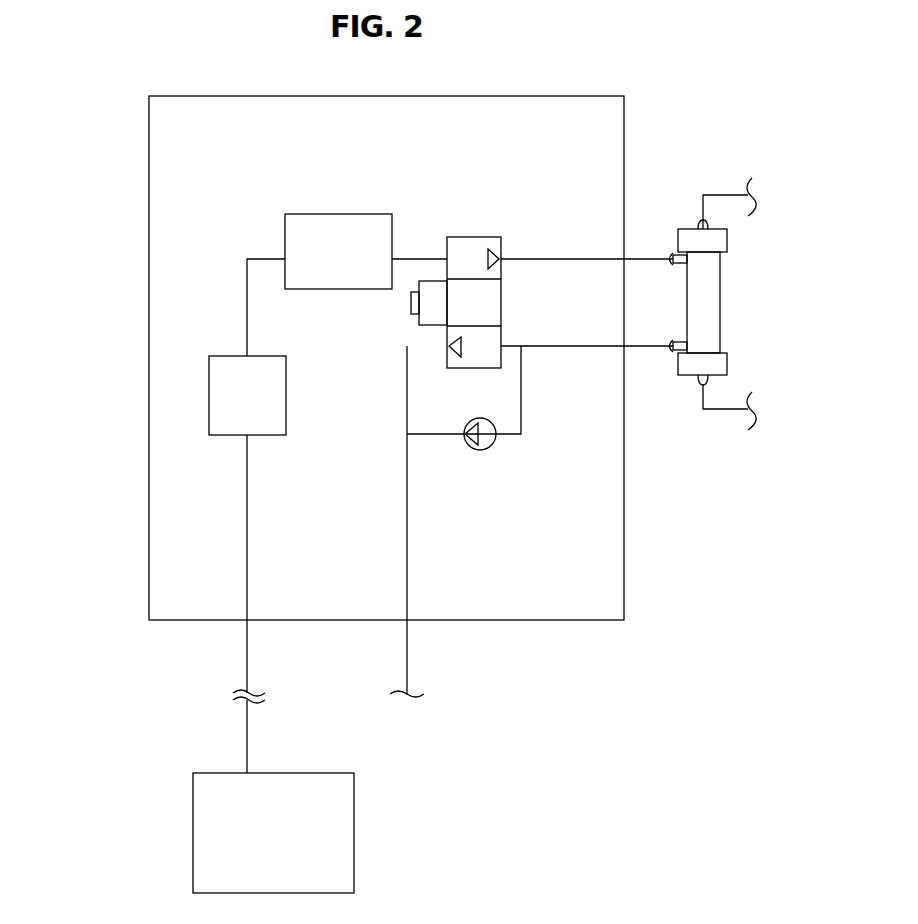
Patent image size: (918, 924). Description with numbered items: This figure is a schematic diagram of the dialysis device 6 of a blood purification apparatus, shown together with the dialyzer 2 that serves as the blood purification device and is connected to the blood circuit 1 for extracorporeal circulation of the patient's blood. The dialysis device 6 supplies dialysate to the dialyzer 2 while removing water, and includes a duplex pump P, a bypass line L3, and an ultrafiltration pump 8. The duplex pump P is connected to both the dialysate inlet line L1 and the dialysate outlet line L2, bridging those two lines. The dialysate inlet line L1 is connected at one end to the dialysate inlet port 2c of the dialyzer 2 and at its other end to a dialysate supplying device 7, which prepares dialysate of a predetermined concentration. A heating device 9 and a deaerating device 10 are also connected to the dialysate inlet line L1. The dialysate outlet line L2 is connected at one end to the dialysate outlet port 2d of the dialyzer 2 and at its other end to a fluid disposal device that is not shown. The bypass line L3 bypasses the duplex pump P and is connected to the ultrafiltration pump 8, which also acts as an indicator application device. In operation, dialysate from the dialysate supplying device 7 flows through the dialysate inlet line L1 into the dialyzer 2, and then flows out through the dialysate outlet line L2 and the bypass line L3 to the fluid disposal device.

The blood circuit 1 is at (728, 165).
The dialyzer 2 is at (687, 310).
The dialysate inlet port 2c is at (675, 254).
The dialysate outlet port 2d is at (675, 356).
The dialysis device 6 is at (149, 184).
The dialysate supplying device 7 is at (296, 773).
The ultrafiltration pump 8 is at (488, 449).
The heating device 9 is at (286, 390).
The deaerating device 10 is at (325, 289).
The duplex pump P is at (471, 237).
The dialysate inlet line L1 is at (552, 258).
The dialysate outlet line L2 is at (577, 350).
The bypass line L3 is at (521, 392).